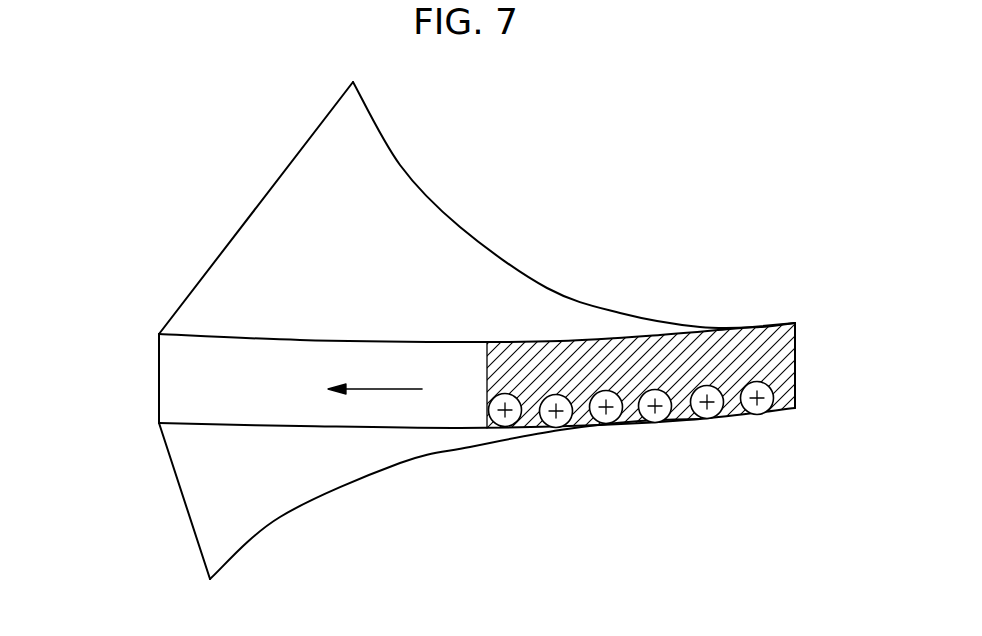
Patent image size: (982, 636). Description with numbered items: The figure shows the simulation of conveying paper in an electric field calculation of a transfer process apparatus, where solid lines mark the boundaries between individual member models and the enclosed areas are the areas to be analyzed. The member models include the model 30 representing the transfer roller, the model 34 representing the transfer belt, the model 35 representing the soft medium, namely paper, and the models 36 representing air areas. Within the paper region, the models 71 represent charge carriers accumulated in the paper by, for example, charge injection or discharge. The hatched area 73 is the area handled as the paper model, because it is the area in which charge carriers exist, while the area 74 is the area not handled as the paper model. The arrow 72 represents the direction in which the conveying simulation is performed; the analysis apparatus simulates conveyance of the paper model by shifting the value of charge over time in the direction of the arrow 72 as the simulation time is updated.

The model of transfer roller 30 is at (331, 540).
The model of transfer belt 34 is at (502, 199).
The model of soft medium (paper) 35 is at (159, 369).
The models of air areas 36 is at (302, 203).
The charge carrier models 71 is at (789, 411).
The arrow 72 is at (384, 388).
The hatched area (paper model area) 73 is at (617, 347).
The area not handled as paper model 74 is at (244, 390).